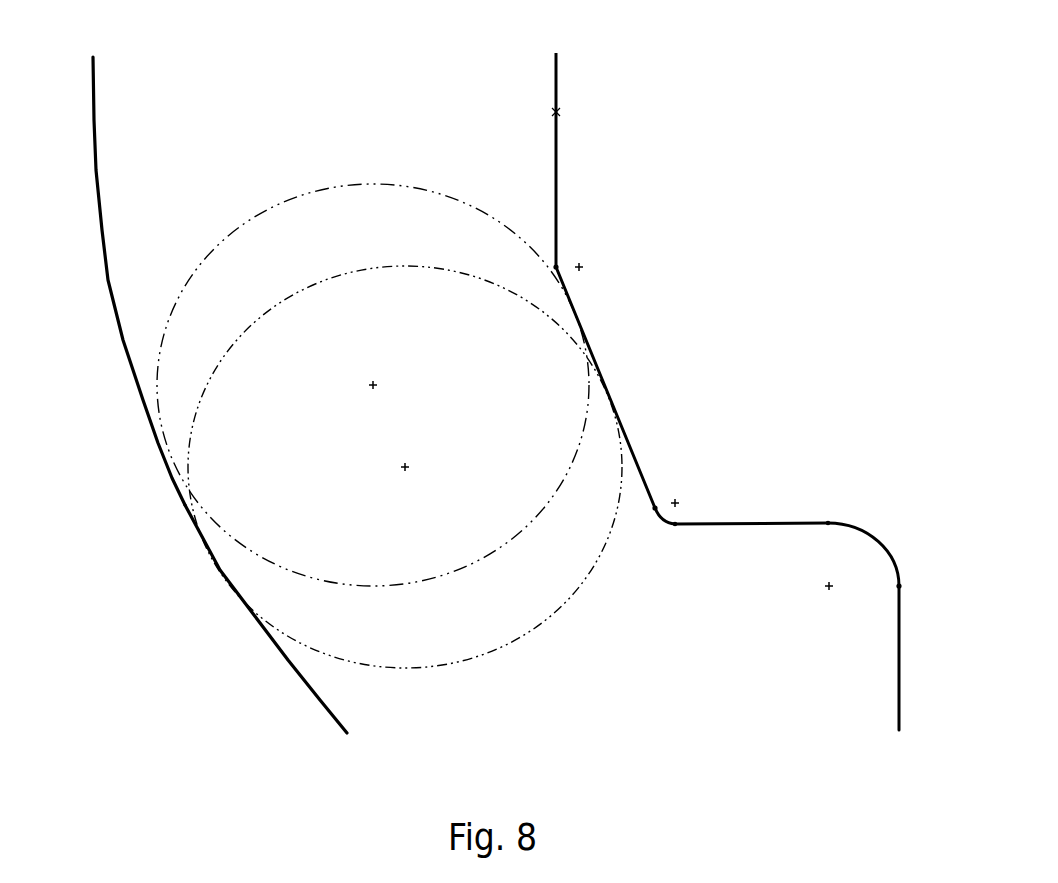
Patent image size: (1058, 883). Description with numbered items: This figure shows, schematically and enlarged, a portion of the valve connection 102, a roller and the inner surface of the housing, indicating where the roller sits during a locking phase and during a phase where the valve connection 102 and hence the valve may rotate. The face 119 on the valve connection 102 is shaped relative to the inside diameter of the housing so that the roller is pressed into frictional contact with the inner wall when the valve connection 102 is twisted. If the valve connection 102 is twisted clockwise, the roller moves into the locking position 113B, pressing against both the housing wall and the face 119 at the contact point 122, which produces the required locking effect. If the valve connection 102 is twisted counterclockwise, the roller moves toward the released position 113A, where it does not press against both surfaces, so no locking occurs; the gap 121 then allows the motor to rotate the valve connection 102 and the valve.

The valve connection 102 is at (727, 391).
The roller position during released phase 113A is at (426, 188).
The roller position during locking phase 113B is at (570, 603).
The face 119 is at (643, 472).
The gap 121 is at (158, 446).
The contact point 122 is at (220, 570).